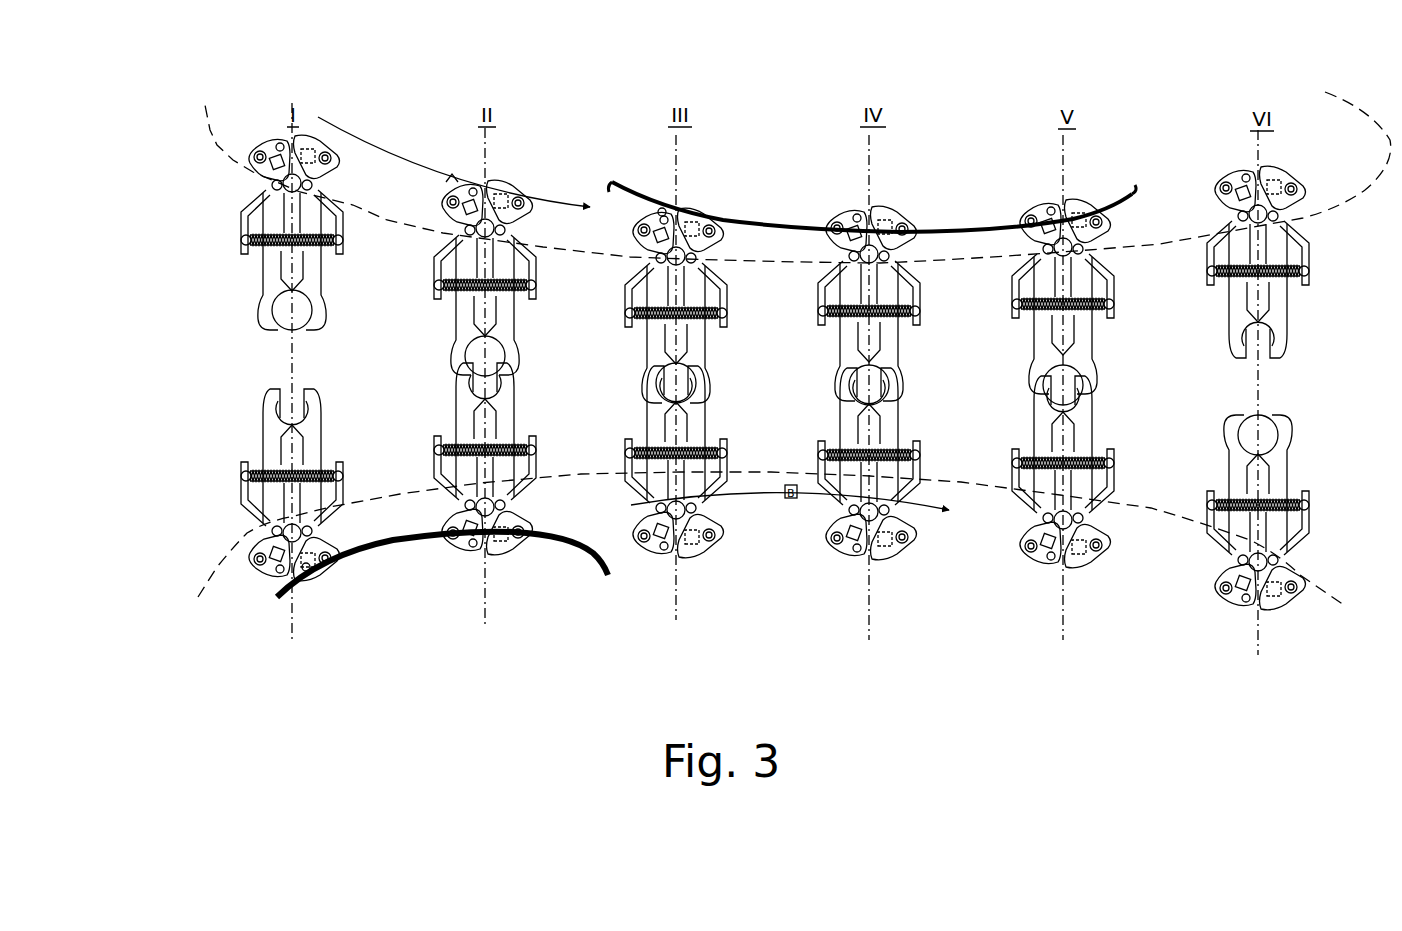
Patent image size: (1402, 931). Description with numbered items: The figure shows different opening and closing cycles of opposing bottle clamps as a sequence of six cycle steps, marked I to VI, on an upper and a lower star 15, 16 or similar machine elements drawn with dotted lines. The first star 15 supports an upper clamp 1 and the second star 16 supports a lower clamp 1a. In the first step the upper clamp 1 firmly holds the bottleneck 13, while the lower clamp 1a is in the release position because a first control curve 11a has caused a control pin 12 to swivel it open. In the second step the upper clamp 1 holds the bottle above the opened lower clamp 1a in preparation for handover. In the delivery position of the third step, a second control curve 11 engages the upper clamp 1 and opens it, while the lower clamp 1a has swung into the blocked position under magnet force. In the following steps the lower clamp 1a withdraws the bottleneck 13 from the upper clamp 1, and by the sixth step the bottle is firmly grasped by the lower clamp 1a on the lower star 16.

The upper clamp 1 is at (247, 282).
The lower clamp 1a is at (225, 445).
The second control curve 11 is at (770, 222).
The first control curve 11a is at (368, 550).
The control pin 12 is at (664, 208).
The bottleneck 13 is at (775, 372).
The first star 15 is at (220, 133).
The second star 16 is at (457, 622).